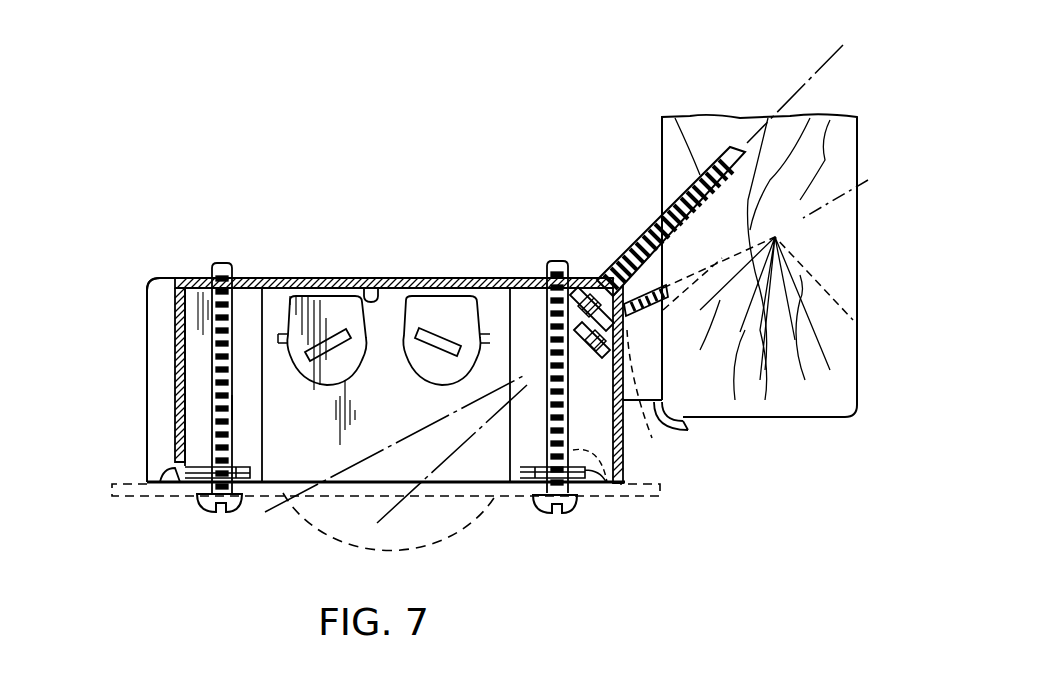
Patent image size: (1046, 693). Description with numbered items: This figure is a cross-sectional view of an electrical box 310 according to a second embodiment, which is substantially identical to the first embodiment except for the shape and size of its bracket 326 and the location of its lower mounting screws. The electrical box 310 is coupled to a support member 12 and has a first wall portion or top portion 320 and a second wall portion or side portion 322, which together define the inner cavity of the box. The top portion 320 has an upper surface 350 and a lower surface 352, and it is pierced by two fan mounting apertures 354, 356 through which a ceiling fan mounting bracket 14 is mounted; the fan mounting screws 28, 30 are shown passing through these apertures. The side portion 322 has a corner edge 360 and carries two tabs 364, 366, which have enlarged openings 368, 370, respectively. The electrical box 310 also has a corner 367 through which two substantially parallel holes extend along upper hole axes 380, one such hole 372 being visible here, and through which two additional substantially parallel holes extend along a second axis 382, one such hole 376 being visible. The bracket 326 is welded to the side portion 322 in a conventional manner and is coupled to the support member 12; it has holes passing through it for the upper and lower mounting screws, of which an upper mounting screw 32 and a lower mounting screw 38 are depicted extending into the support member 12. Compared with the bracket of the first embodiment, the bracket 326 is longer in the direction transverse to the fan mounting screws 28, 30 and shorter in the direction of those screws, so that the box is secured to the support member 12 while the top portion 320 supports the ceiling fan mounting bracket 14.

The electrical box 310 is at (137, 263).
The support member 12 is at (660, 130).
The ceiling fan mounting bracket 14 is at (347, 542).
The fan mounting screw 28 is at (232, 408).
The fan mounting screw 30 is at (570, 513).
The upper mounting screw 32 is at (648, 233).
The lower mounting screw 38 is at (853, 322).
The top portion 320 is at (267, 278).
The side portion 322 is at (173, 373).
The bracket 326 is at (685, 422).
The upper surface 350 is at (408, 278).
The lower surface 352 is at (367, 288).
The fan mounting aperture 354 is at (223, 270).
The fan mounting aperture 356 is at (548, 265).
The corner edge 360 is at (193, 303).
The tab 364 is at (258, 467).
The tab 366 is at (523, 476).
The corner 367 is at (168, 280).
The enlarged opening 368 is at (205, 462).
The enlarged opening 370 is at (623, 468).
The hole 372 is at (612, 275).
The hole 376 is at (652, 438).
The upper hole axis 380 is at (797, 92).
The axis 382 is at (868, 180).